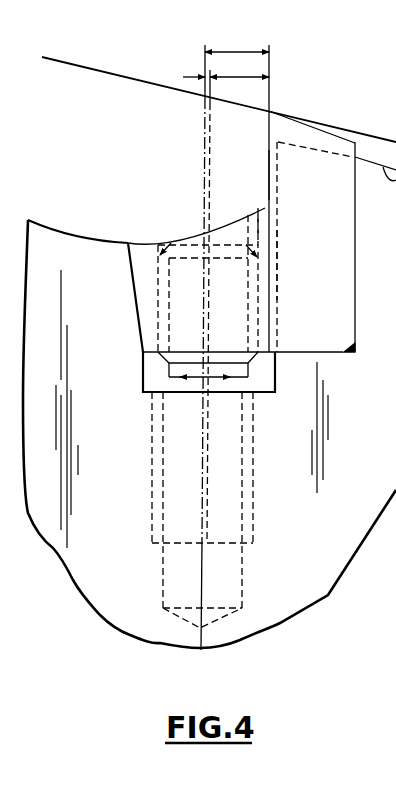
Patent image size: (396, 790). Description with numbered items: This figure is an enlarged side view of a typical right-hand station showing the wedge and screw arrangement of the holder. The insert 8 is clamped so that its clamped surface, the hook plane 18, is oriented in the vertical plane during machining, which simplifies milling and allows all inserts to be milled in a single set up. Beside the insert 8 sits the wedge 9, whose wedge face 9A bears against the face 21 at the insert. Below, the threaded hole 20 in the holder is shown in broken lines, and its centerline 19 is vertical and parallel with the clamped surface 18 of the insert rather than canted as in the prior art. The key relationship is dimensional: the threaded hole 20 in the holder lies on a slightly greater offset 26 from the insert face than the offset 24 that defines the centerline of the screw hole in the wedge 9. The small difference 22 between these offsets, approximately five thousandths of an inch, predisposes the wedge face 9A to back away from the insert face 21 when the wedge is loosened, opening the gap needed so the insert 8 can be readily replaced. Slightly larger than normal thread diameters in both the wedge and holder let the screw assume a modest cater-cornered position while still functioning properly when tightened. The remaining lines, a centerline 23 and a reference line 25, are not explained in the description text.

The insert 8 is at (308, 132).
The wedge 9 is at (265, 209).
The wedge face 9A is at (270, 264).
The hook plane (clamped surface of insert) 18 is at (273, 179).
The centerline of threaded hole 19 is at (200, 602).
The threaded hole 20 is at (253, 530).
The face of wedge (insert face) 21 is at (268, 169).
The difference 22 is at (205, 72).
The center axis 23 is at (210, 142).
The offset 24 is at (243, 78).
The reference line 25 is at (262, 226).
The offset 26 is at (236, 52).